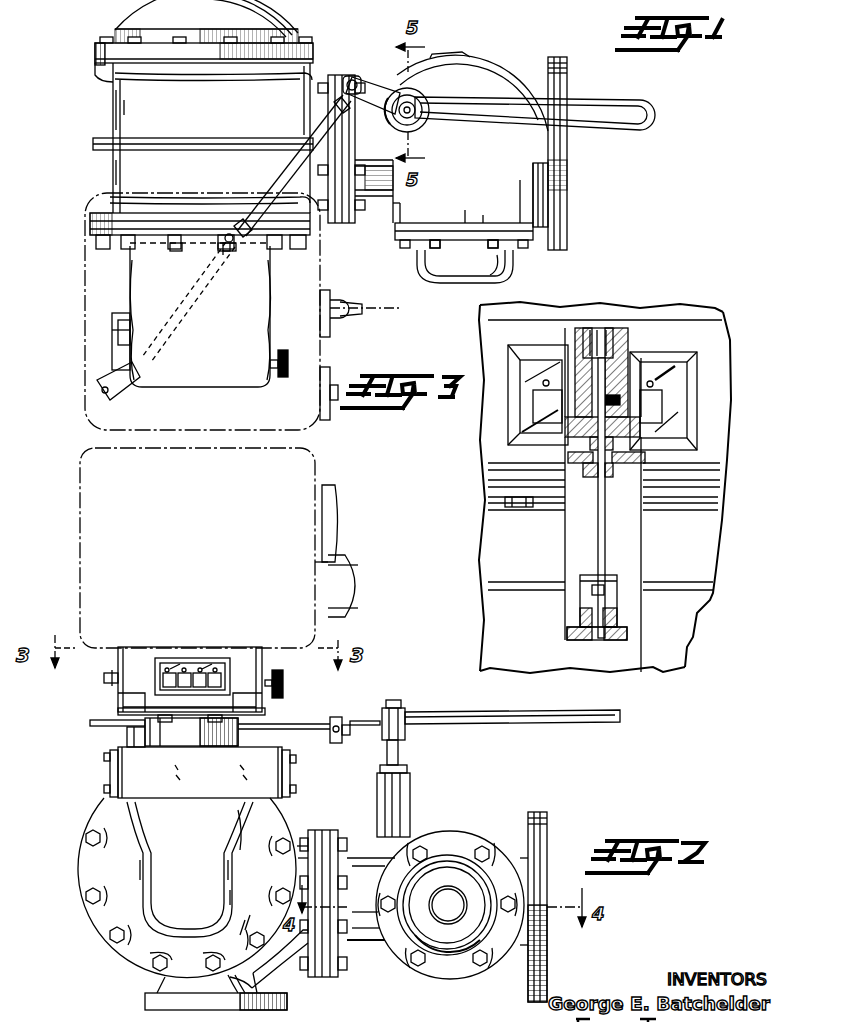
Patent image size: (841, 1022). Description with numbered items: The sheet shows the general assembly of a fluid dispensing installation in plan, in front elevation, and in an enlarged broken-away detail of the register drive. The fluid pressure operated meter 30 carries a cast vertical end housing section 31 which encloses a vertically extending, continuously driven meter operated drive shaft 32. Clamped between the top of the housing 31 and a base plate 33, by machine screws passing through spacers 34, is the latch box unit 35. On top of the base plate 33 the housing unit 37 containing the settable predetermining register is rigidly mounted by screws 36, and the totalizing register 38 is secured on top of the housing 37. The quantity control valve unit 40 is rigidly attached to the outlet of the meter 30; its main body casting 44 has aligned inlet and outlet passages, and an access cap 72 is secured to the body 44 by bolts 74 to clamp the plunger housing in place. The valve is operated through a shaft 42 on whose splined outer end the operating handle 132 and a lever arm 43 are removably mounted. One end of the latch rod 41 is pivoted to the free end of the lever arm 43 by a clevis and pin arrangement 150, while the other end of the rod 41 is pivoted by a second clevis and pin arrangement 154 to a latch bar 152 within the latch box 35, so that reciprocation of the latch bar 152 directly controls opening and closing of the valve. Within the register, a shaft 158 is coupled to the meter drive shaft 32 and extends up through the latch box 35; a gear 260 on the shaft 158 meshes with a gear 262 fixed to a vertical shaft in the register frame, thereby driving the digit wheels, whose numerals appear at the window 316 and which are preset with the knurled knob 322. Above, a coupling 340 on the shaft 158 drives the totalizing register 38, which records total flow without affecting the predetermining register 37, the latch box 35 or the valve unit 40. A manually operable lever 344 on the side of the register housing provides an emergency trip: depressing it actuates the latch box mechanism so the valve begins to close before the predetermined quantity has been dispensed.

In FIG. 1, the fluid pressure operated meter 30 is at (113, 120).
In FIG. 2, the fluid pressure operated meter 30 is at (85, 822).
In FIG. 2, the vertical end housing section 31 is at (143, 878).
In FIG. 3, the meter operated drive shaft 32 is at (588, 640).
In FIG. 2, the base plate 33 is at (118, 716).
In FIG. 2, the spacers 34 is at (127, 736).
In FIG. 3, the latch box unit 35 is at (703, 558).
In FIG. 2, the latch box unit 35 is at (155, 742).
In FIG. 3, the screws 36 is at (520, 508).
In FIG. 2, the screws 36 is at (210, 724).
In FIG. 1, the housing unit 37 is at (125, 298).
In FIG. 3, the housing unit 37 is at (730, 337).
In FIG. 2, the housing unit 37 is at (110, 660).
In FIG. 1, the totalizing register 38 is at (85, 412).
In FIG. 3, the totalizing register 38 is at (678, 305).
In FIG. 2, the totalizing register 38 is at (318, 465).
In FIG. 1, the quantity control valve unit 40 is at (500, 78).
In FIG. 2, the quantity control valve unit 40 is at (470, 833).
In FIG. 1, the latch rod 41 is at (275, 182).
In FIG. 2, the latch rod 41 is at (295, 723).
In FIG. 1, the shaft 42 is at (412, 94).
In FIG. 2, the shaft 42 is at (424, 756).
In FIG. 1, the lever arm 43 is at (376, 82).
In FIG. 2, the lever arm 43 is at (352, 736).
In FIG. 1, the main body casting 44 is at (545, 185).
In FIG. 1, the access cap 72 is at (448, 282).
In FIG. 2, the access cap 72 is at (450, 865).
In FIG. 1, the bolts 74 is at (483, 252).
In FIG. 2, the bolts 74 is at (392, 895).
In FIG. 1, the operating handle 132 is at (597, 100).
In FIG. 2, the operating handle 132 is at (498, 711).
In FIG. 1, the clevis and pin arrangement 150 is at (350, 80).
In FIG. 2, the clevis and pin arrangement 150 is at (338, 720).
In FIG. 1, the latch bar 152 is at (97, 390).
In FIG. 2, the latch bar 152 is at (90, 723).
In FIG. 1, the clevis and pin arrangement 154 is at (233, 246).
In FIG. 3, the shaft 158 is at (602, 506).
In FIG. 3, the gear 260 is at (568, 458).
In FIG. 3, the gear 262 is at (645, 458).
In FIG. 3, the window 316 is at (538, 368).
In FIG. 2, the window 316 is at (203, 665).
In FIG. 1, the knurled knob 322 is at (296, 339).
In FIG. 2, the knurled knob 322 is at (283, 686).
In FIG. 3, the coupling 340 is at (632, 356).
In FIG. 1, the manually operable lever 344 is at (112, 354).
In FIG. 2, the manually operable lever 344 is at (104, 679).